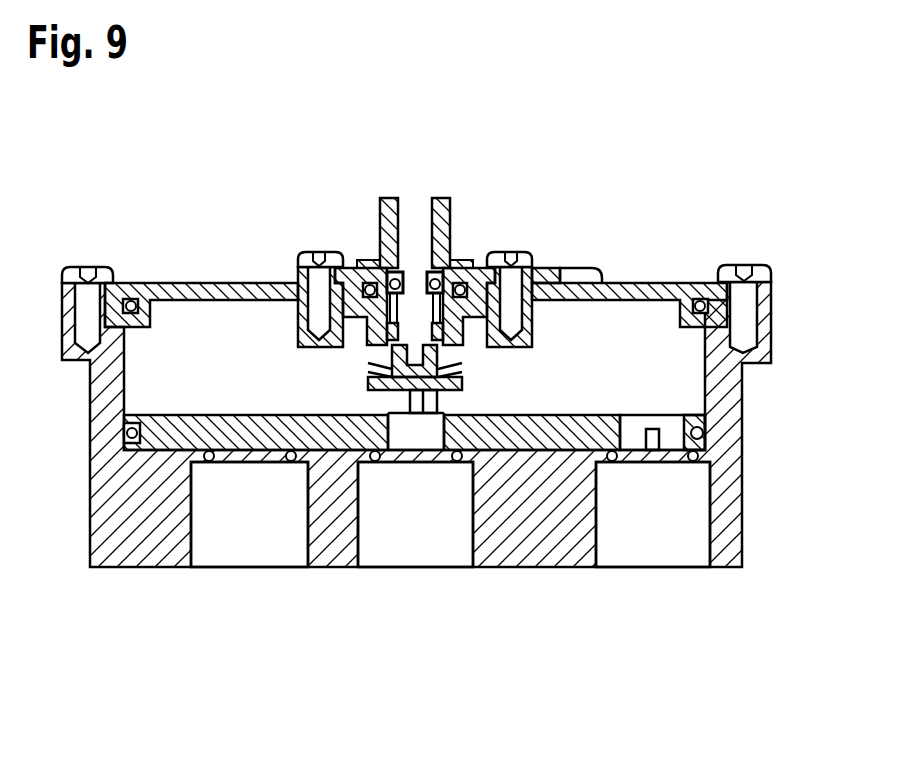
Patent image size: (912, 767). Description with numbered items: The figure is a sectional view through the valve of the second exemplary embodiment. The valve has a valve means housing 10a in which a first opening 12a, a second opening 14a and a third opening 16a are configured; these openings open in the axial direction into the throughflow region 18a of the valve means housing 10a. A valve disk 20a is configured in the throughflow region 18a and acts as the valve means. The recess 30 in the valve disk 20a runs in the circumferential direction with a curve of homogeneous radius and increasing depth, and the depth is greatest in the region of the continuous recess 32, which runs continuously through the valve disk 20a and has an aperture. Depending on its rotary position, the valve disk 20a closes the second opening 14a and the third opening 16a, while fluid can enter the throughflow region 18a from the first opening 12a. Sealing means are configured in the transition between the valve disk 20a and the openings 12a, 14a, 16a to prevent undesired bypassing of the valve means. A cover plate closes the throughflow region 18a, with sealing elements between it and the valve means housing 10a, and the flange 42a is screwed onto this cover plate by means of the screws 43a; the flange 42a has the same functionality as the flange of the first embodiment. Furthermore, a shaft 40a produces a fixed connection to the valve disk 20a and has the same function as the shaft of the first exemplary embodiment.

The valve means housing 10a is at (146, 540).
The first opening 12a is at (428, 538).
The second opening 14a is at (250, 538).
The third opening 16a is at (675, 538).
The throughflow region 18a is at (198, 368).
The valve disk 20a is at (560, 438).
The recess 30 is at (653, 438).
The continuous recess 32 is at (668, 423).
The shaft 40a is at (413, 210).
The flange 42a is at (550, 268).
The screws 43a is at (511, 268).